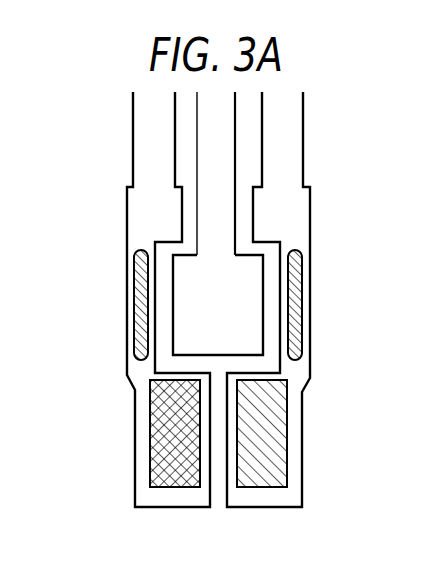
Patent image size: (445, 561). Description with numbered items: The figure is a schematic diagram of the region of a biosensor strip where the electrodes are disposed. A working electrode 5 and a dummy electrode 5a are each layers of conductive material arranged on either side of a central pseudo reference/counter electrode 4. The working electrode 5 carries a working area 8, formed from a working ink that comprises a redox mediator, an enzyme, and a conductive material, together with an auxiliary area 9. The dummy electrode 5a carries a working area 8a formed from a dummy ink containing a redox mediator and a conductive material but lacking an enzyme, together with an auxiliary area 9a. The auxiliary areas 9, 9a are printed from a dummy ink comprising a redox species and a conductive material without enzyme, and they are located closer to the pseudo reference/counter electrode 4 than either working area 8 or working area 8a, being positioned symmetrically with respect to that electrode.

The working electrode 5 is at (138, 223).
The dummy electrode 5a is at (290, 214).
The pseudo reference/counter electrode 4 is at (183, 328).
The auxiliary area 9 is at (137, 288).
The auxiliary area 9a is at (293, 302).
The working area 8 is at (158, 429).
The working area 8a is at (277, 436).